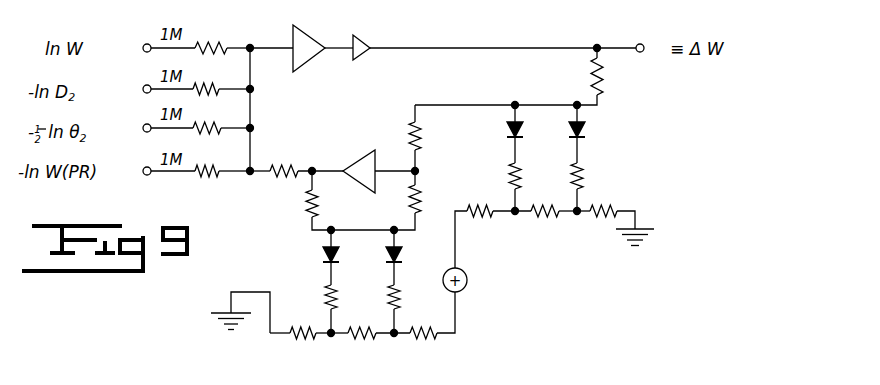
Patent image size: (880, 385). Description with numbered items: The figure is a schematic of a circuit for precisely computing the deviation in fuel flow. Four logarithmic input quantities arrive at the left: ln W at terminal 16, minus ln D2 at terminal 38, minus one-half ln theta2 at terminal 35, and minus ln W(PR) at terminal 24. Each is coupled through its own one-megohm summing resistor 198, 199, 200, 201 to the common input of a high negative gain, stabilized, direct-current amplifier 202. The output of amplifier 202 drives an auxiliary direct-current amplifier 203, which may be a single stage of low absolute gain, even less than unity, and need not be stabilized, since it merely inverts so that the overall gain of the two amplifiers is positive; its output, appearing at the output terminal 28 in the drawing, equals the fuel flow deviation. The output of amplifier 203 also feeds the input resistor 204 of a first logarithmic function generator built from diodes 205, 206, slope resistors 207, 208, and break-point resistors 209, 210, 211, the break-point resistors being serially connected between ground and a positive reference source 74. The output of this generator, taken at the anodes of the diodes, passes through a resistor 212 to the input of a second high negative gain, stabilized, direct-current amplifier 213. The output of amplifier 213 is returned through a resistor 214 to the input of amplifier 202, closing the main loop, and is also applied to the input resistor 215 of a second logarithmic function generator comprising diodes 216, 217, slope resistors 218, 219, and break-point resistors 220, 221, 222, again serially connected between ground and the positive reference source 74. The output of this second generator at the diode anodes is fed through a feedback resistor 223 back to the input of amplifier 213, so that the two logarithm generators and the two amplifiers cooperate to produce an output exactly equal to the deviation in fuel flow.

The terminal 16 is at (144, 44).
The terminal 38 is at (144, 86).
The terminal 35 is at (144, 126).
The terminal 24 is at (147, 178).
The output terminal delta W 28 is at (638, 56).
The positive reference source 74 is at (466, 282).
The summing resistor 198 is at (213, 45).
The summing resistor 199 is at (218, 93).
The summing resistor 200 is at (201, 133).
The summing resistor 201 is at (209, 178).
The direct-current amplifier 202 is at (315, 60).
The auxiliary direct-current amplifier 203 is at (364, 50).
The input resistor 204 is at (590, 85).
The diode 205 is at (585, 127).
The diode 206 is at (548, 130).
The slope resistor 207 is at (584, 175).
The slope resistor 208 is at (522, 170).
The break-point resistor 209 is at (602, 216).
The break-point resistor 210 is at (547, 226).
The break-point resistor 211 is at (492, 220).
The resistor 212 is at (422, 138).
The direct-current amplifier 213 is at (355, 155).
The resistor 214 is at (283, 172).
The input resistor 215 is at (318, 198).
The diode 216 is at (325, 253).
The diode 217 is at (396, 250).
The slope resistor 218 is at (324, 294).
The slope resistor 219 is at (392, 294).
The break-point resistor 220 is at (301, 336).
The break-point resistor 221 is at (360, 336).
The break-point resistor 222 is at (425, 336).
The feedback resistor 223 is at (422, 180).